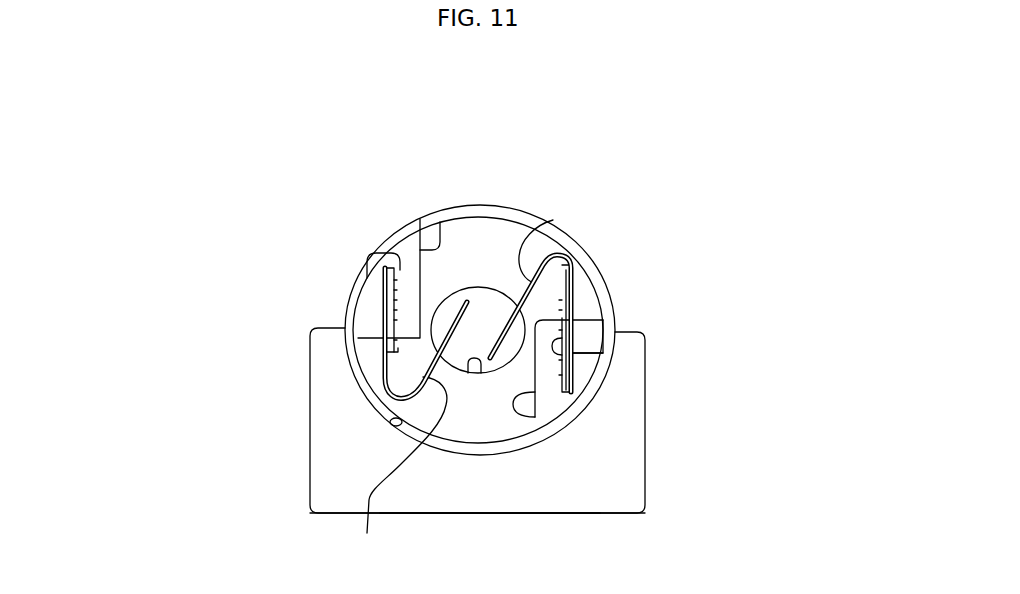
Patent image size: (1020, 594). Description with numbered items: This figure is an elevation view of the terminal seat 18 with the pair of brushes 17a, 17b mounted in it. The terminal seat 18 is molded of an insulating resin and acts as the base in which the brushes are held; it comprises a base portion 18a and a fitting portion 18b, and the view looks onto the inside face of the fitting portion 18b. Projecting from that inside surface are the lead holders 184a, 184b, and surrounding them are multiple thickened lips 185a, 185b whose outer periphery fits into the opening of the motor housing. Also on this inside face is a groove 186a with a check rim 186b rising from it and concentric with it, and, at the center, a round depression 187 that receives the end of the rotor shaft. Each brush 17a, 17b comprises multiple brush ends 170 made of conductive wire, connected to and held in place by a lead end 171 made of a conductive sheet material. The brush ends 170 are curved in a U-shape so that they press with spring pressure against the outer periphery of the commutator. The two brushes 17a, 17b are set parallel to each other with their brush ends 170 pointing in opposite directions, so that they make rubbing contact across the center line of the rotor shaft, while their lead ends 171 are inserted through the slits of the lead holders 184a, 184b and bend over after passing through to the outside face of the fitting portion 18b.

The terminal seat 18 is at (296, 431).
The base portion 18a is at (592, 490).
The fitting portion 18b is at (503, 230).
The brush 17a is at (331, 389).
The brush 17b is at (532, 258).
The brush end 170 is at (541, 227).
The lead end 171 is at (410, 248).
The lead holder 184a is at (438, 227).
The lead holder 184b is at (535, 416).
The thickened lip 185a is at (483, 213).
The thickened lip 185b is at (368, 268).
The groove 186a is at (390, 426).
The check rim 186b is at (450, 212).
The round depression 187 is at (471, 375).